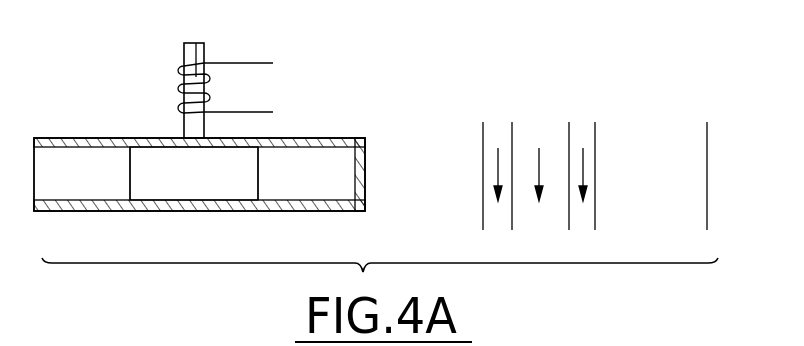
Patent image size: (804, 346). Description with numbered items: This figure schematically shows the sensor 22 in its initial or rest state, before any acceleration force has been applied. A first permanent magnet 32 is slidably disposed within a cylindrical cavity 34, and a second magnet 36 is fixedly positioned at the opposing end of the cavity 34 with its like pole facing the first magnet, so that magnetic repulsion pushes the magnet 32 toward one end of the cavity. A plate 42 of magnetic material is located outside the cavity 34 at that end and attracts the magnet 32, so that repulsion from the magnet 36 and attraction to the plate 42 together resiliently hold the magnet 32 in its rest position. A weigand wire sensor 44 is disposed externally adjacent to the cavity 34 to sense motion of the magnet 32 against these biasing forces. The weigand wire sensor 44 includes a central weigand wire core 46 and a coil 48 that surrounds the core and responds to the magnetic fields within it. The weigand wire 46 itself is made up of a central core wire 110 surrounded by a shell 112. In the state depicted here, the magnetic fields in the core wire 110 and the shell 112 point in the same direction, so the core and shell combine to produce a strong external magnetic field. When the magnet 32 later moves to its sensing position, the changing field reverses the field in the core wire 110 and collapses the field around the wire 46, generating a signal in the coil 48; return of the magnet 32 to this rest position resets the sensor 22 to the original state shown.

The sensor 22 is at (283, 47).
The first permanent magnet 32 is at (308, 152).
The cylindrical cavity 34 is at (205, 195).
The second magnet 36 is at (71, 152).
The plate 42 is at (366, 141).
The weigand wire sensor 44 is at (210, 53).
The weigand wire core 46 is at (184, 42).
The coil 48 is at (172, 86).
The central core wire 110 is at (550, 130).
The shell 112 is at (583, 209).